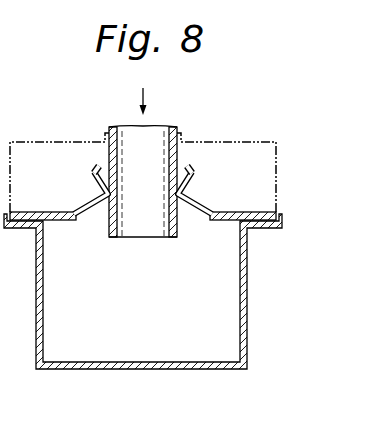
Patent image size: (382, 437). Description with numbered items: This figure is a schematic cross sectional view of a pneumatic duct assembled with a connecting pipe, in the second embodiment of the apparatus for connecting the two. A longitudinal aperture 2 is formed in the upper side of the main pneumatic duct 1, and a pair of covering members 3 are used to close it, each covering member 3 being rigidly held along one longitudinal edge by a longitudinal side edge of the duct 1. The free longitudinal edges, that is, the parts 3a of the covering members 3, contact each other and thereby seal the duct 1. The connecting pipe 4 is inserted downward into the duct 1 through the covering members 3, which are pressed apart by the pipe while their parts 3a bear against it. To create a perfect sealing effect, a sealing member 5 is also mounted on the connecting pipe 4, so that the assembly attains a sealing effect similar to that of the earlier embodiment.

The main pneumatic duct 1 is at (247, 313).
The longitudinal aperture 2 is at (184, 216).
The covering member 3 is at (92, 204).
The free longitudinal edge part 3a is at (89, 176).
The connecting pipe 4 is at (161, 142).
The sealing member 5 is at (254, 138).